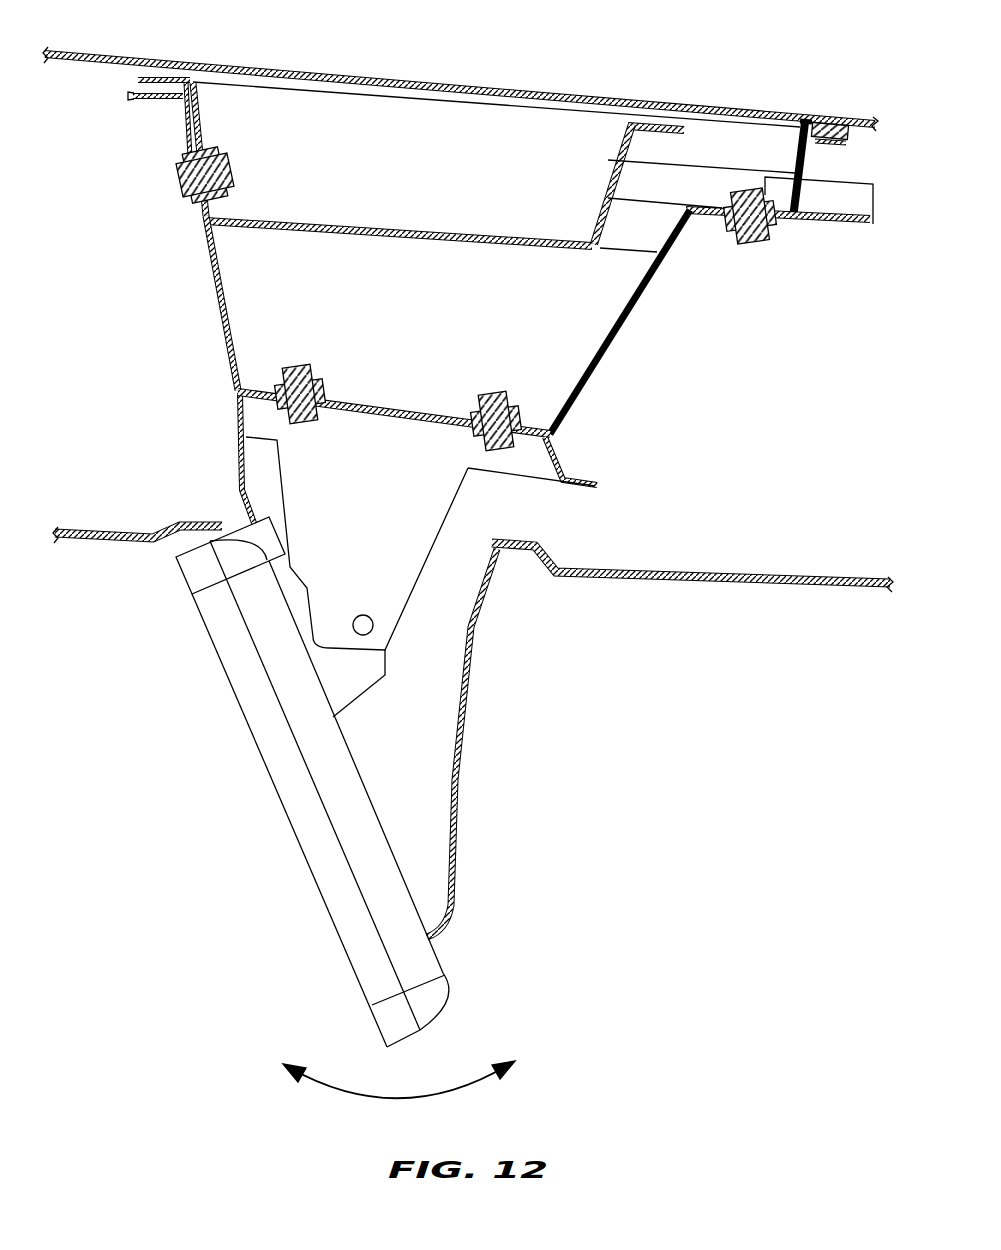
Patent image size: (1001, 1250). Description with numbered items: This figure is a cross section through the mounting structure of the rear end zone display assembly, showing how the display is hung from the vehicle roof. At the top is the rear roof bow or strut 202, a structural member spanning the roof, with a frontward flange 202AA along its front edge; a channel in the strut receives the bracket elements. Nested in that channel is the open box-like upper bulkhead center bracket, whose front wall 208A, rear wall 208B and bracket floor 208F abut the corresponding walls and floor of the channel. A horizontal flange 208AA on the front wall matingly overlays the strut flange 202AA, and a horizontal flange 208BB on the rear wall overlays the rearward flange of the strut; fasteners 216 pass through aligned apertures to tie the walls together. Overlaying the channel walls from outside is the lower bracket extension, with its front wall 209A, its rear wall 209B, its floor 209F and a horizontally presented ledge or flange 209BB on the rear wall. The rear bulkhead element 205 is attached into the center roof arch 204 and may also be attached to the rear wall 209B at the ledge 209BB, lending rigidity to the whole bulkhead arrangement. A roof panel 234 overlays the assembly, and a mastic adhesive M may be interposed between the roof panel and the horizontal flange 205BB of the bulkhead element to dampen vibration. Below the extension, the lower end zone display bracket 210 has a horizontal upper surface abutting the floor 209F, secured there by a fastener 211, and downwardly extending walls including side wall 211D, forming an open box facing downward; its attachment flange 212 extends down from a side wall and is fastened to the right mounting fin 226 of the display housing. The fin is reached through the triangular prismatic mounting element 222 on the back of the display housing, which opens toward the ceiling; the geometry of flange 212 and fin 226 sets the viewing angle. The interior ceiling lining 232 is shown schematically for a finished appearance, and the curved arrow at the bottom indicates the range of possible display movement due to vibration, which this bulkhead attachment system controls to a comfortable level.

The horizontal flange 208AA is at (157, 77).
The frontward flange 202AA is at (132, 94).
The rear roof bow or strut 202 is at (182, 115).
The front wall 208A is at (197, 116).
The fastener 216 is at (178, 178).
The bracket floor 208F is at (358, 222).
The front wall 209A is at (217, 293).
The horizontal flange 208BB is at (655, 123).
The rear wall 208B is at (610, 170).
The roof panel 234 is at (797, 121).
The mastic adhesive M is at (829, 120).
The horizontal flange 205BB is at (830, 146).
The rear bulkhead element 205 is at (803, 170).
The center roof arch 204 is at (820, 226).
The horizontal flange 209BB is at (702, 222).
The rear wall 209B is at (617, 340).
The floor 209F is at (370, 403).
The fastener 211 is at (498, 397).
The lower end zone display bracket 210 is at (547, 460).
The side wall 211D is at (512, 462).
The attachment flange 212 is at (380, 524).
The interior ceiling lining 232 is at (108, 547).
The mounting element 222 is at (480, 642).
The right mounting fin 226 is at (347, 677).